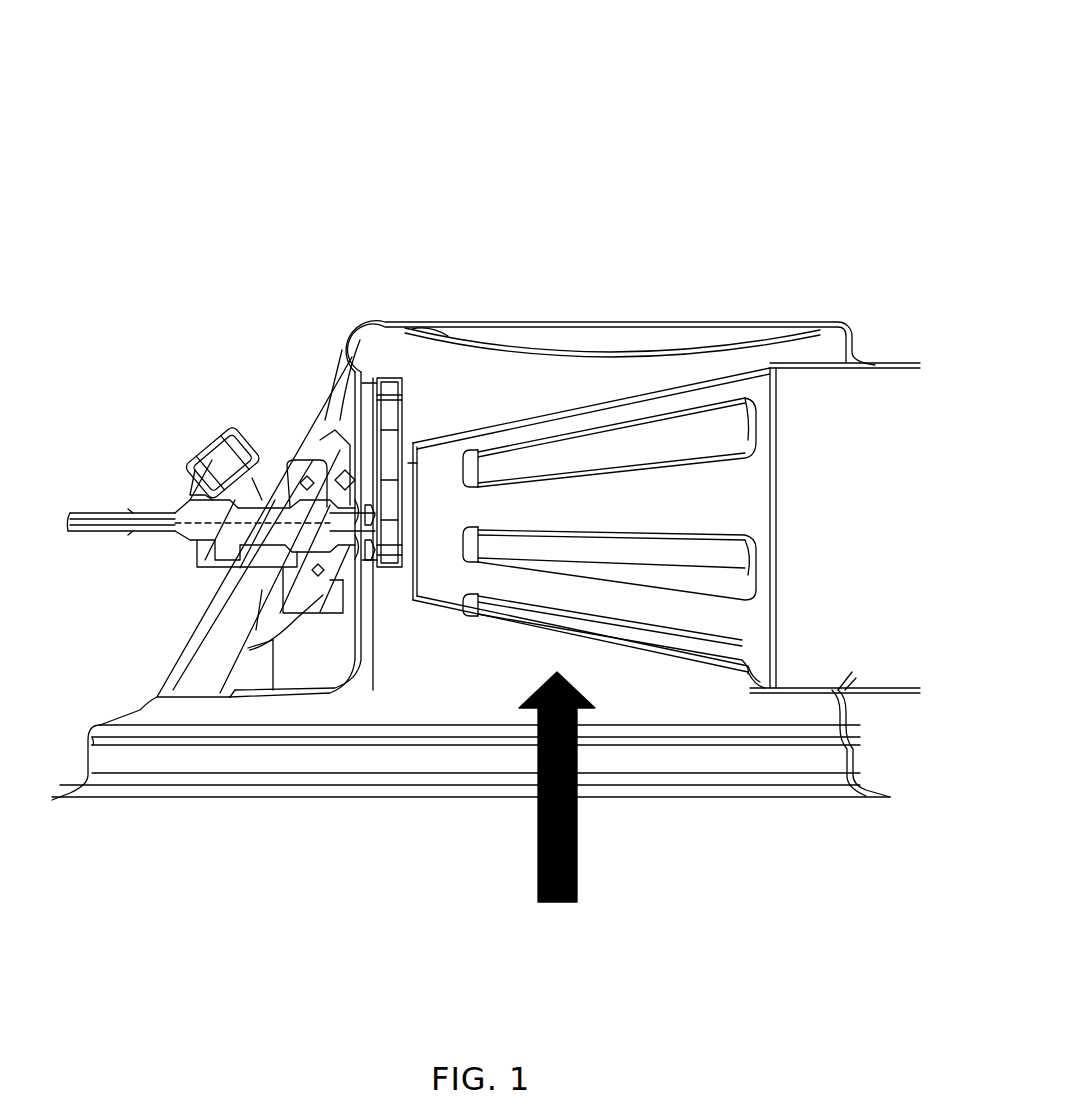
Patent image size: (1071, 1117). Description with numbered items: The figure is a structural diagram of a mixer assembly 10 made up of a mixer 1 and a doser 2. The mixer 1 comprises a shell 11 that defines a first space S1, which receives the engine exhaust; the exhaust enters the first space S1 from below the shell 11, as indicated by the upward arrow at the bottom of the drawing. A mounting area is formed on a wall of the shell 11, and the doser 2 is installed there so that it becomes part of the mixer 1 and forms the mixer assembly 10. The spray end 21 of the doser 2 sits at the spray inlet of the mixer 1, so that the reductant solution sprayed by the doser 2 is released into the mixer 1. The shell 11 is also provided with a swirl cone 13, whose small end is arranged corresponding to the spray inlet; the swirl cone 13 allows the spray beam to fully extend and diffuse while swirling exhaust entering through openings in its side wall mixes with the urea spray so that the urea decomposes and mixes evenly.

The mixer assembly 10 is at (583, 26).
The mixer 1 is at (555, 308).
The shell 11 is at (412, 322).
The swirl cone 13 is at (693, 400).
The doser 2 is at (227, 518).
The spray end 21 is at (373, 510).
The first space S1 is at (767, 705).